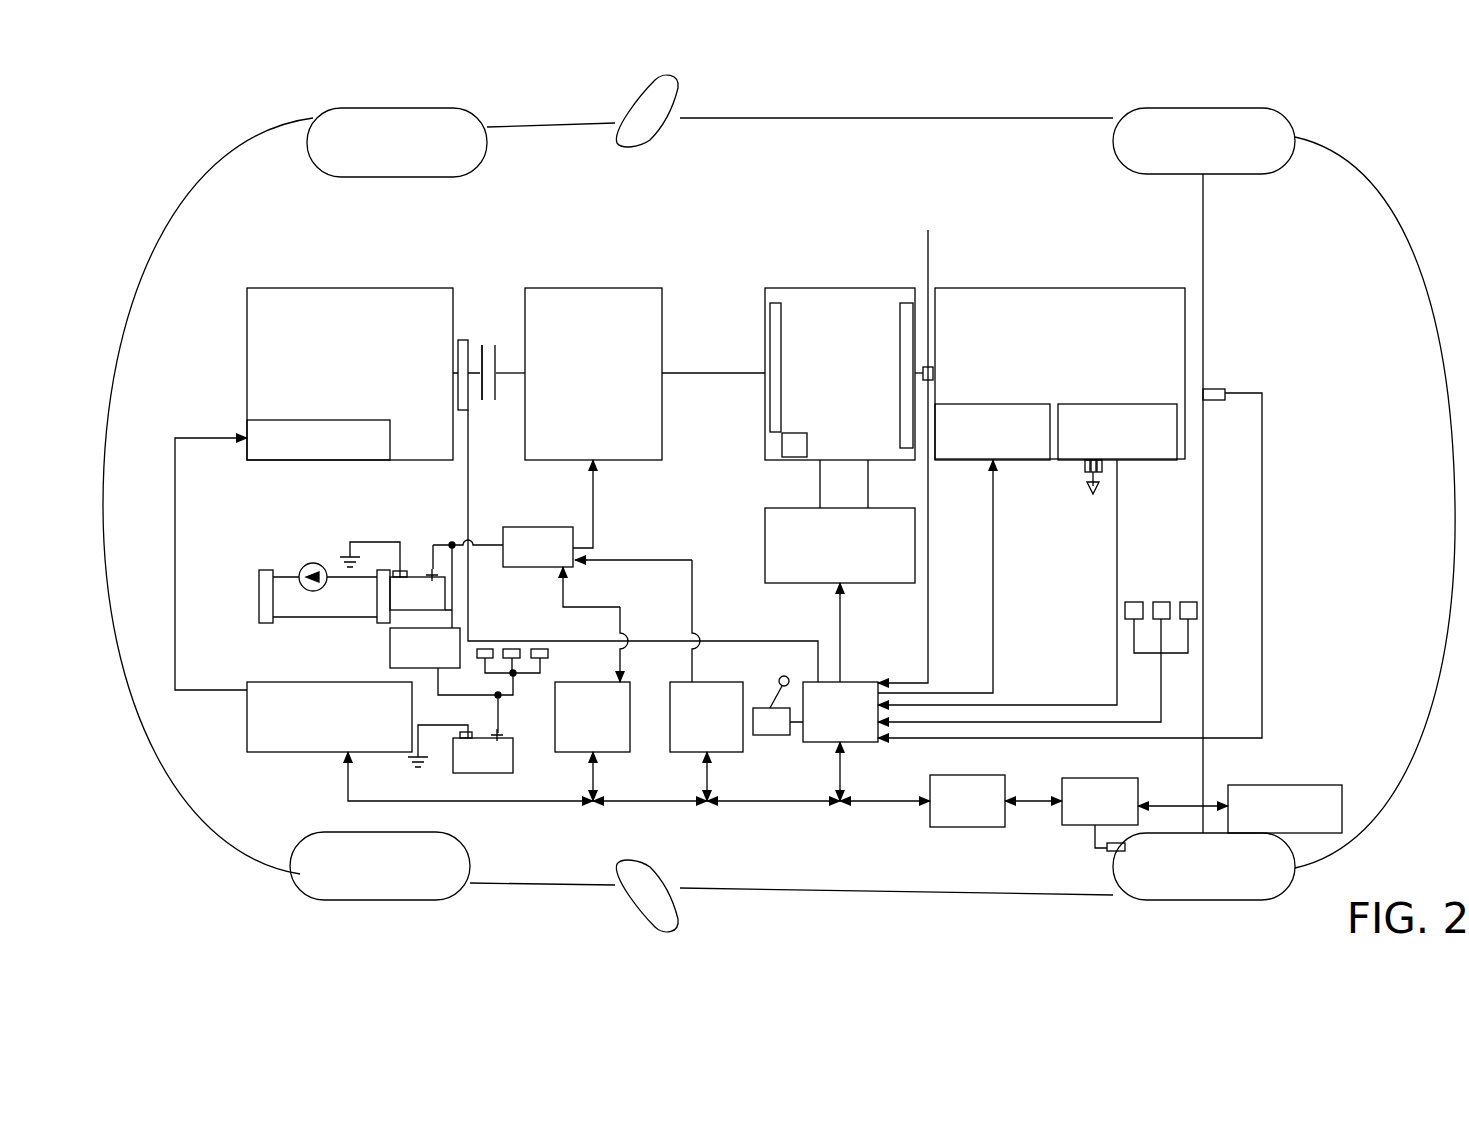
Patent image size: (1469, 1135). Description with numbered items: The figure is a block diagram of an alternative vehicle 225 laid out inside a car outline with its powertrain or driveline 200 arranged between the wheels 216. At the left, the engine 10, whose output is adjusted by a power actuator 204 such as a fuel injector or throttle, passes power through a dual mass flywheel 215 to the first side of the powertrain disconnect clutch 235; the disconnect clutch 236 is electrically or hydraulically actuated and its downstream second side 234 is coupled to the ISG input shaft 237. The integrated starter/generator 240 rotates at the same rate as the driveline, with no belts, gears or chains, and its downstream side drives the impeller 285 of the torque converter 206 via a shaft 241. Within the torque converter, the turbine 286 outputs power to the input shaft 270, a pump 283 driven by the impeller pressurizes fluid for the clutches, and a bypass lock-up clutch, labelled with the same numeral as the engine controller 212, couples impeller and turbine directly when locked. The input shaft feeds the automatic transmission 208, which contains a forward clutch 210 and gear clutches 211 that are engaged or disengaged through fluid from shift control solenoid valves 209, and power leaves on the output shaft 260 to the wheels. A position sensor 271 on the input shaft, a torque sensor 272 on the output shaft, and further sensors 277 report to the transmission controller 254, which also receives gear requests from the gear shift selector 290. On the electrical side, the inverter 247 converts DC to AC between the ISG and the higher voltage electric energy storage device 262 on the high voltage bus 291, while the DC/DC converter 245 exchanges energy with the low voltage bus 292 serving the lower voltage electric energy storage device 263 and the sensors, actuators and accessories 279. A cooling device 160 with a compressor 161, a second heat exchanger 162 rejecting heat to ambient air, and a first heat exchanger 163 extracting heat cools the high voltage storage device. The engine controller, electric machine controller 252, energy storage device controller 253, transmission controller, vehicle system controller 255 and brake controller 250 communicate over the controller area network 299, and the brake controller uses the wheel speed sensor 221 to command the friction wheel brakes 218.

The powertrain 200 is at (1370, 127).
The vehicle 225 is at (246, 131).
The wheels 216 is at (1120, 120).
The output shaft 260 is at (1205, 357).
The engine 10 is at (403, 288).
The power actuator 204 is at (277, 460).
The dual mass flywheel 215 is at (462, 340).
The powertrain disconnect clutch 235 is at (480, 386).
The disconnect clutch 236 is at (486, 399).
The second side of disconnect clutch 234 is at (497, 398).
The ISG input shaft 237 is at (513, 372).
The integrated starter/generator 240 is at (573, 288).
The shaft 241 is at (677, 380).
The torque converter 206 is at (765, 290).
The impeller 285 is at (775, 432).
The pump 283 is at (795, 452).
The turbine 286 is at (905, 302).
The input shaft 270 is at (910, 442).
The position sensor 271 is at (936, 302).
The engine controller 212 is at (810, 584).
The automatic transmission 208 is at (1065, 288).
The forward clutch 210 is at (1040, 459).
The gear clutches 211 is at (1172, 459).
The shift control solenoid valves 209 is at (1092, 493).
The torque sensor 272 is at (1224, 391).
The sensors 277 is at (1156, 598).
The cooling device 160 is at (304, 533).
The compressor 161 is at (301, 571).
The second heat exchanger 162 is at (259, 577).
The first heat exchanger 163 is at (377, 604).
The electric energy storage device 262 is at (415, 575).
The high voltage bus 291 is at (450, 545).
The inverter 247 is at (597, 533).
The DC/DC converter 245 is at (451, 661).
The sensors/actuators/accessories 279 is at (552, 663).
The low voltage bus 292 is at (500, 700).
The electric energy storage device 263 is at (464, 768).
The energy storage device controller 253 is at (592, 704).
The electric machine controller 252 is at (706, 680).
The transmission controller 254 is at (840, 692).
The gear shift selector 290 is at (763, 697).
The controller area network 299 is at (505, 803).
The vehicle system controller 255 is at (967, 801).
The brake controller 250 is at (1100, 801).
The friction wheel brakes 218 is at (1335, 785).
The wheel speed sensor 221 is at (1105, 850).